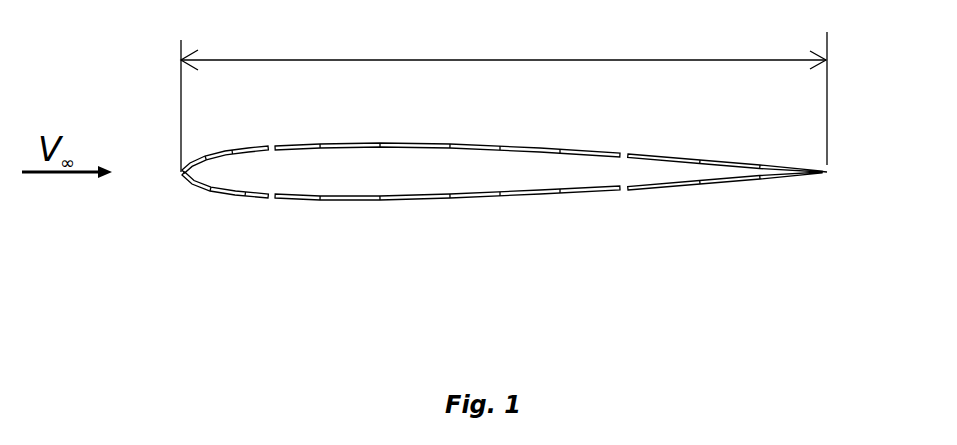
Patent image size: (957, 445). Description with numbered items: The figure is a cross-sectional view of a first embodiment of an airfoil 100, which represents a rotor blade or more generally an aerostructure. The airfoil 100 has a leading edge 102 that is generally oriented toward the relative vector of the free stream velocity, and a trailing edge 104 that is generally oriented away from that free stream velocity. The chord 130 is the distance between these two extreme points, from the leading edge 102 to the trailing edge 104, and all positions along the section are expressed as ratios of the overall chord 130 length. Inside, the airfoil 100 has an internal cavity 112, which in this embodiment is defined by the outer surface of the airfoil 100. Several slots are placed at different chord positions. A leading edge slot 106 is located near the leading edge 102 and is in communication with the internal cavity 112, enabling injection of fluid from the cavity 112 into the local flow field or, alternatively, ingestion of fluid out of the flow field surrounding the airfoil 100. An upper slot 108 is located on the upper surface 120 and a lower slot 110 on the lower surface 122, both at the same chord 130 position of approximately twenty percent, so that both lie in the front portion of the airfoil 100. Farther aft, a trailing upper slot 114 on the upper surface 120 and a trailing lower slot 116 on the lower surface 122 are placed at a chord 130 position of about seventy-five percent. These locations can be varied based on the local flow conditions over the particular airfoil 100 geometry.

The airfoil 100 is at (508, 191).
The leading edge 102 is at (196, 184).
The trailing edge 104 is at (830, 171).
The leading edge slot 106 is at (182, 173).
The upper slot 108 is at (270, 146).
The lower slot 110 is at (268, 200).
The internal cavity 112 is at (508, 191).
The trailing upper slot 114 is at (628, 153).
The trailing lower slot 116 is at (628, 192).
The upper surface 120 is at (532, 143).
The lower surface 122 is at (463, 207).
The chord 130 is at (487, 59).